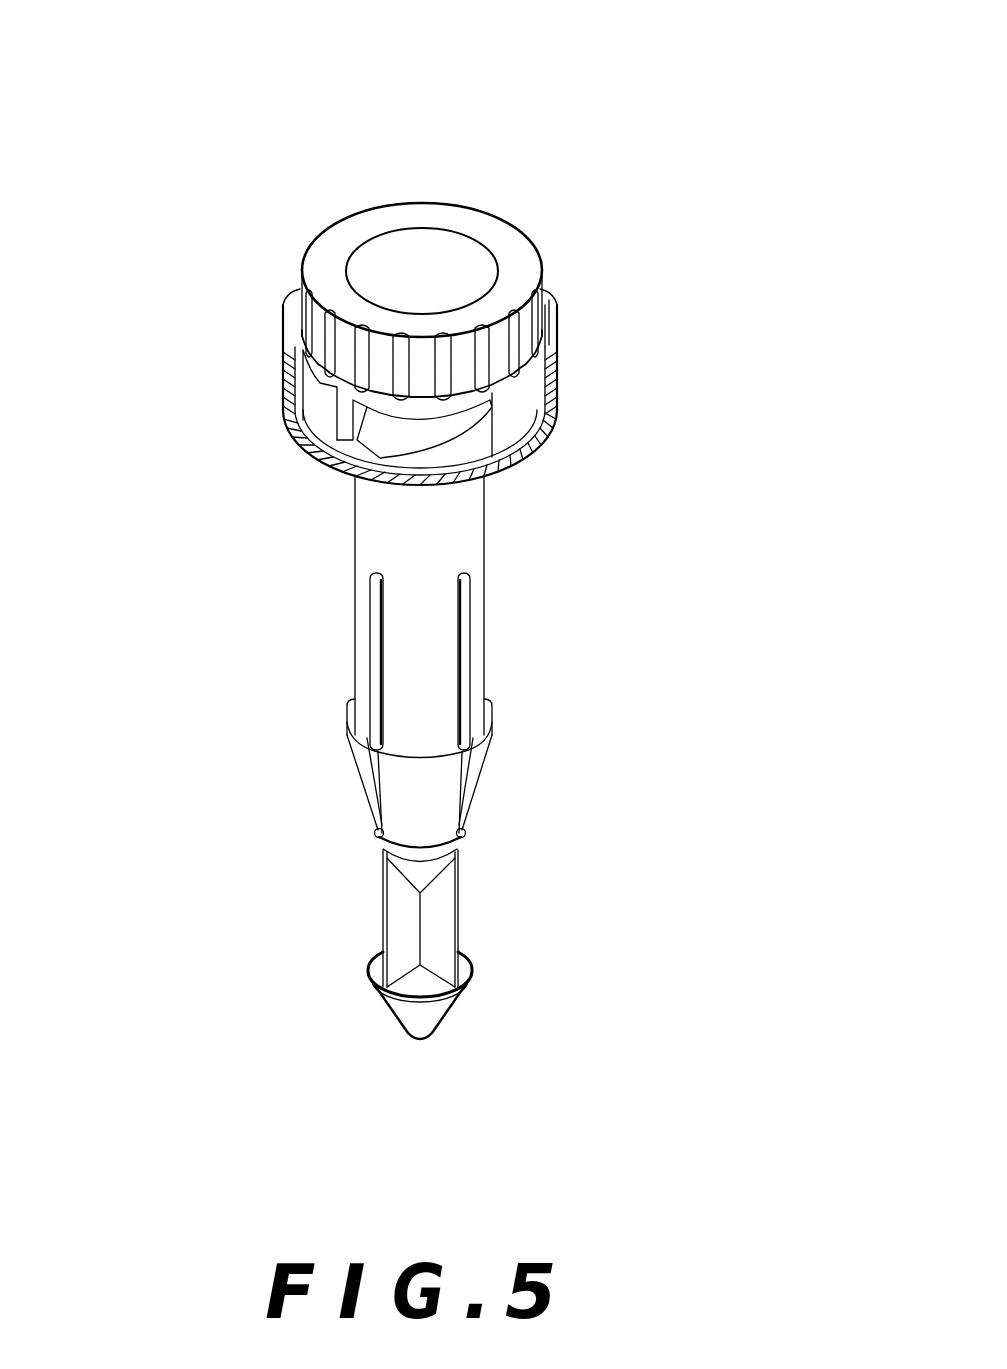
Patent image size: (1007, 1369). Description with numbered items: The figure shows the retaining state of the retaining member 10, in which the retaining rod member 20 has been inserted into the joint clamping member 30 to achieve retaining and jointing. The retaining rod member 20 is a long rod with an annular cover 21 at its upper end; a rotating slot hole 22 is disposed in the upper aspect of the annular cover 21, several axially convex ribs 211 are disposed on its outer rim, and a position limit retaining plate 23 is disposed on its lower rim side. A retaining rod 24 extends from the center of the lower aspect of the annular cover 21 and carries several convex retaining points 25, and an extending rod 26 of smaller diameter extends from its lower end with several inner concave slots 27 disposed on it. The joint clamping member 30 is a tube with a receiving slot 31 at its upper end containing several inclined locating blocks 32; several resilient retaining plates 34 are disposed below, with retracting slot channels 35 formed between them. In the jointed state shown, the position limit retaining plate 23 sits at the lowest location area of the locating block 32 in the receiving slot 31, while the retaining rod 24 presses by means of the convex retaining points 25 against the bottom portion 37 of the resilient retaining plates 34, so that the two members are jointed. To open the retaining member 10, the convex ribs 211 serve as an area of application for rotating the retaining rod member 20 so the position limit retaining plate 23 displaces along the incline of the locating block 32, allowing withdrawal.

The retaining member 10 is at (220, 238).
The retaining rod member 20 is at (515, 235).
The annular cover 21 is at (493, 386).
The axially convex ribs 211 is at (537, 322).
The rotating slot hole 22 is at (433, 267).
The position limit retaining plate 23 is at (343, 422).
The retaining rod 24 is at (457, 857).
The convex retaining points 25 is at (467, 834).
The extending rod 26 is at (427, 1012).
The inner concave slots 27 is at (402, 922).
The joint clamping member 30 is at (496, 667).
The receiving slot 31 is at (363, 436).
The inclined locating blocks 32 is at (467, 437).
The resilient retaining plates 34 is at (432, 780).
The retracting slot channels 35 is at (380, 684).
The bottom portion 37 is at (413, 843).